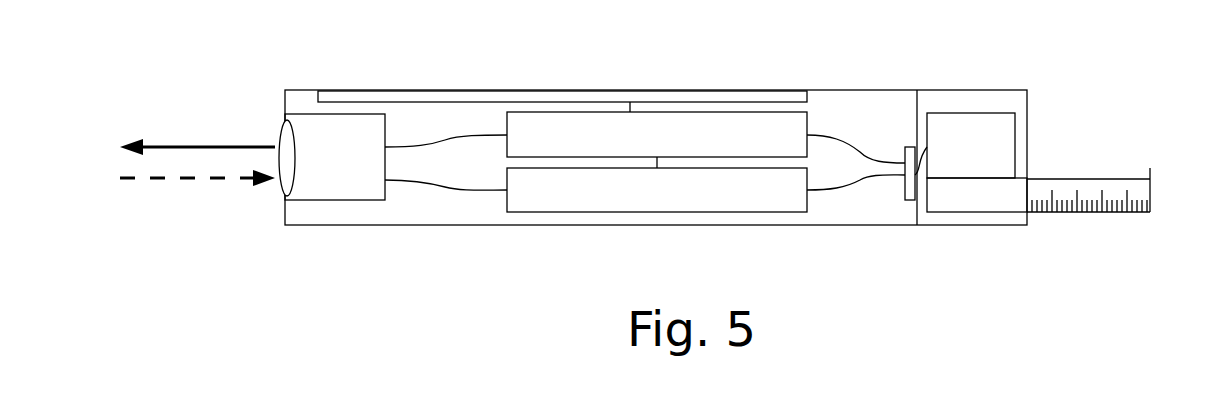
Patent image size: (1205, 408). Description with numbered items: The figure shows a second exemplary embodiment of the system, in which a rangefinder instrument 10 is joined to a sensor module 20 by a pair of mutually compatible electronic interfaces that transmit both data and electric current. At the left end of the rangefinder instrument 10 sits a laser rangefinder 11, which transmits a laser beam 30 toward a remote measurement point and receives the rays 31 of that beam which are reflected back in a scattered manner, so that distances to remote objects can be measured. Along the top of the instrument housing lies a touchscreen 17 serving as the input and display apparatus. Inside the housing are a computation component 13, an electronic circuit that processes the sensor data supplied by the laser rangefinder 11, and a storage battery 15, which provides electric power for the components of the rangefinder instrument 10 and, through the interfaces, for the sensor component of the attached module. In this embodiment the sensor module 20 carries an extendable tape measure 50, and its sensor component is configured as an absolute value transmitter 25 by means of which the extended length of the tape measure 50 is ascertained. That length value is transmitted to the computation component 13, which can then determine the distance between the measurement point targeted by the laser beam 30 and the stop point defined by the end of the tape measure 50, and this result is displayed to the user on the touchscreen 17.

The rangefinder instrument 10 is at (656, 122).
The laser rangefinder 11 is at (349, 172).
The computation component 13 is at (672, 151).
The storage battery 15 is at (672, 206).
The touchscreen 17 is at (562, 80).
The sensor module 20 is at (950, 122).
The absolute value transmitter 25 is at (986, 161).
The laser beam 30 is at (193, 120).
The rays of the laser beam 31 is at (193, 208).
The extendable tape measure 50 is at (1088, 165).